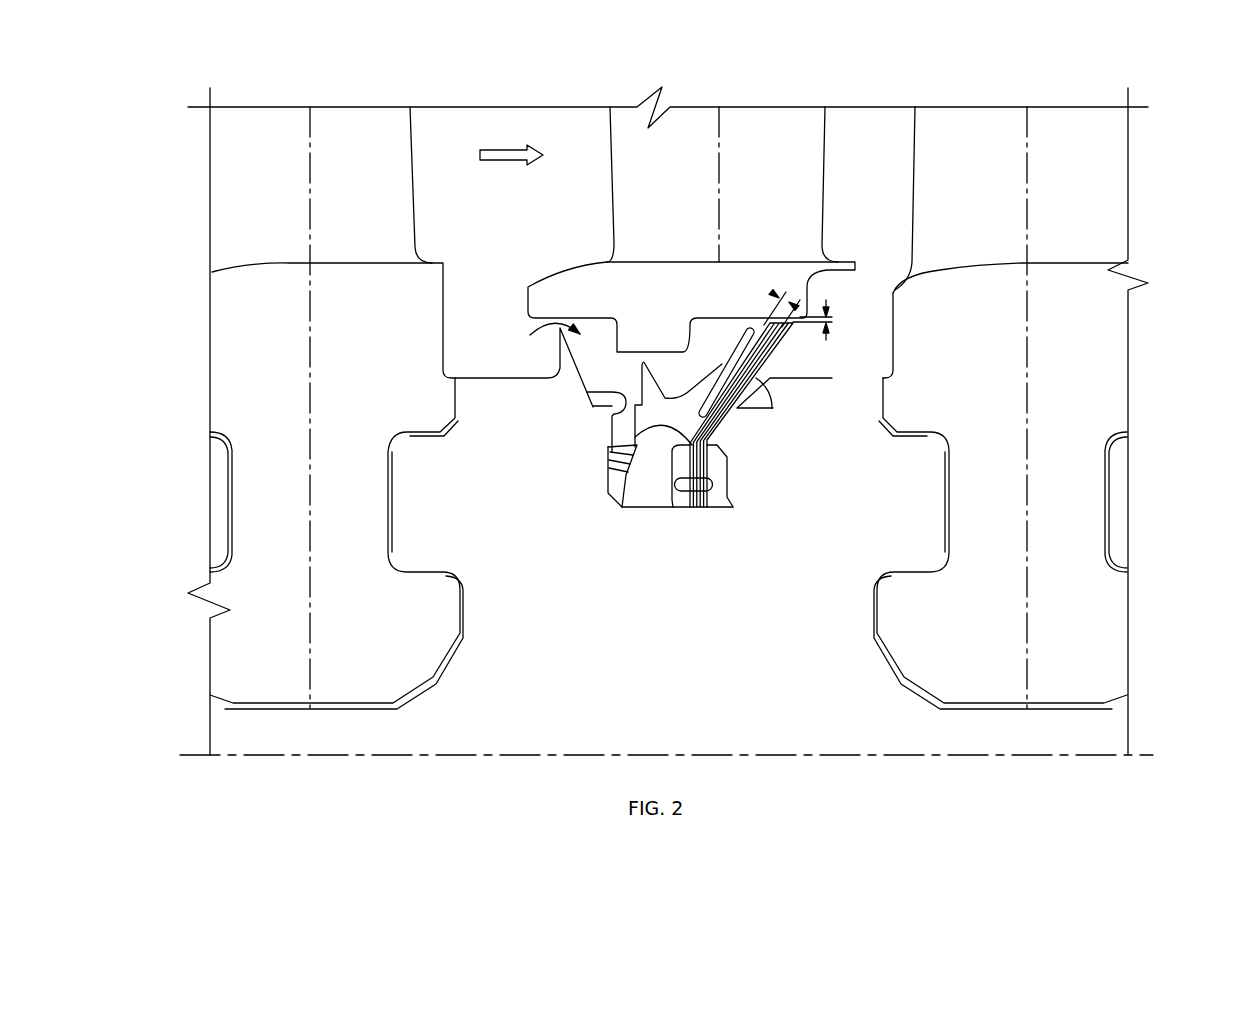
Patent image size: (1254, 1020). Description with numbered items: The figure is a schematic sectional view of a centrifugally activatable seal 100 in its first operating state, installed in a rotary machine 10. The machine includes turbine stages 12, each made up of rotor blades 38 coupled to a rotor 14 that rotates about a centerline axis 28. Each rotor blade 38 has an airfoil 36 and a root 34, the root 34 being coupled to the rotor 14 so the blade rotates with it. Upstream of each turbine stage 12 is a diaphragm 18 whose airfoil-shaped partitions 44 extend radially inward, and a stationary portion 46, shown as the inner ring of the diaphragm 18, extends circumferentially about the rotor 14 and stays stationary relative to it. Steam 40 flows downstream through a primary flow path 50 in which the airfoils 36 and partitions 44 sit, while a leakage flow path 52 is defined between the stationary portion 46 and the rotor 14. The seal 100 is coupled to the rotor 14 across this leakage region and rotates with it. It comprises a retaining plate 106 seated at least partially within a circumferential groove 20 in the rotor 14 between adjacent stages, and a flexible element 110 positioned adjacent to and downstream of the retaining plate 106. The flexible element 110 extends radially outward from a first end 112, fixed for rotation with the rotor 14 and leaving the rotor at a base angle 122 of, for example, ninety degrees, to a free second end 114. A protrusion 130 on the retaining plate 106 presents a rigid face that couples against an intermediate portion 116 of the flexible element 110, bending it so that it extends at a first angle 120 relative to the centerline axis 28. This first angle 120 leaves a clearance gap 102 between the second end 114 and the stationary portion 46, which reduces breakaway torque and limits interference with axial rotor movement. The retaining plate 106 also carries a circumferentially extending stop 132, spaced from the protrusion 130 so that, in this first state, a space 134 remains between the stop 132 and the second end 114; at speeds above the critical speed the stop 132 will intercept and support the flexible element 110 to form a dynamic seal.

The rotary machine 10 is at (1165, 122).
The turbine stage 12 is at (293, 722).
The rotor 14 is at (653, 629).
The diaphragm 18 is at (635, 137).
The groove 20 is at (590, 393).
The centerline axis 28 is at (1140, 755).
The root 34 is at (668, 543).
The airfoil 36 is at (667, 198).
The rotor blade 38 is at (230, 180).
The steam 40 is at (497, 140).
The partition 44 is at (722, 184).
The stationary portion 46 is at (691, 307).
The primary flow path 50 is at (859, 156).
The leakage flow path 52 is at (540, 327).
The centrifugally activatable seal 100 is at (723, 540).
The clearance gap 102 is at (827, 305).
The retaining plate 106 is at (648, 478).
The flexible element 110 is at (735, 420).
The first end 112 is at (675, 528).
The second end 114 is at (810, 347).
The intermediate portion 116 is at (718, 437).
The first angle 120 is at (769, 393).
The base angle 122 is at (715, 491).
The protrusion 130 is at (633, 437).
The stop 132 is at (722, 371).
The space 134 is at (780, 297).